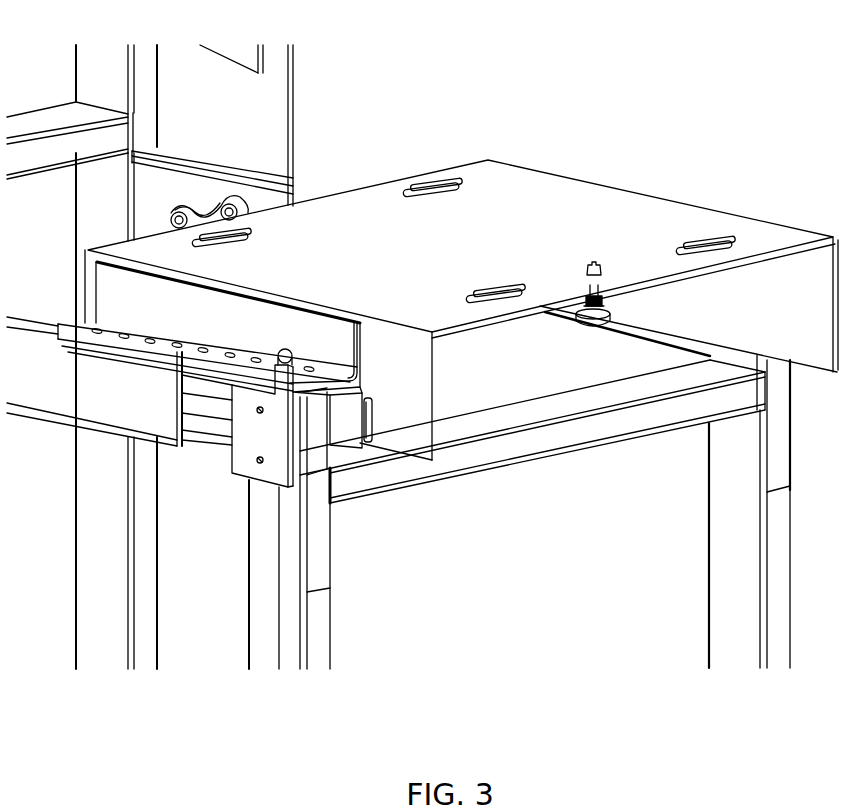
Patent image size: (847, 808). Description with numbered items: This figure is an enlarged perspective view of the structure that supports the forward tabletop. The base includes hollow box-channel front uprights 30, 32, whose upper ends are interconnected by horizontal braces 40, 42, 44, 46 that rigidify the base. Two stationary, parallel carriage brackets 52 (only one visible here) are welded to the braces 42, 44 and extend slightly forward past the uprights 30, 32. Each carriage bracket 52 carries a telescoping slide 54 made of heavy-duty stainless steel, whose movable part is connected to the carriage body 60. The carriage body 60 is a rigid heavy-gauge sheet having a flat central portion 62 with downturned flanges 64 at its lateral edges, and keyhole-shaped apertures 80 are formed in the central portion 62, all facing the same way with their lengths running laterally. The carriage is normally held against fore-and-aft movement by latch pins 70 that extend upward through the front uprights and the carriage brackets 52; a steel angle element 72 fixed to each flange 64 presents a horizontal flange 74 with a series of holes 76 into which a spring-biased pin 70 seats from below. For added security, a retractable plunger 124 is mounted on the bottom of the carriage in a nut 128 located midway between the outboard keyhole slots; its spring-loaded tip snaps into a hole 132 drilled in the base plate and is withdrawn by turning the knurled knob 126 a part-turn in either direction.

The front upright 30 is at (307, 592).
The front upright 32 is at (720, 540).
The horizontal brace 40 is at (527, 445).
The horizontal brace 42 is at (203, 447).
The horizontal brace 44 is at (317, 190).
The horizontal brace 46 is at (30, 157).
The stationary carriage bracket 52 is at (128, 357).
The telescoping slide 54 is at (373, 420).
The carriage body 60 is at (461, 282).
The central portion 62 is at (461, 249).
The downturned flange 64 is at (461, 348).
The latch pin 70 is at (302, 348).
The steel angle element 72 is at (323, 353).
The horizontal flange 74 is at (200, 357).
The holes 76 is at (135, 333).
The keyhole-shaped aperture 80 is at (418, 187).
The retractable plunger 124 is at (625, 311).
The knurled knob 126 is at (578, 333).
The nut 128 is at (620, 298).
The hole 132 is at (594, 262).